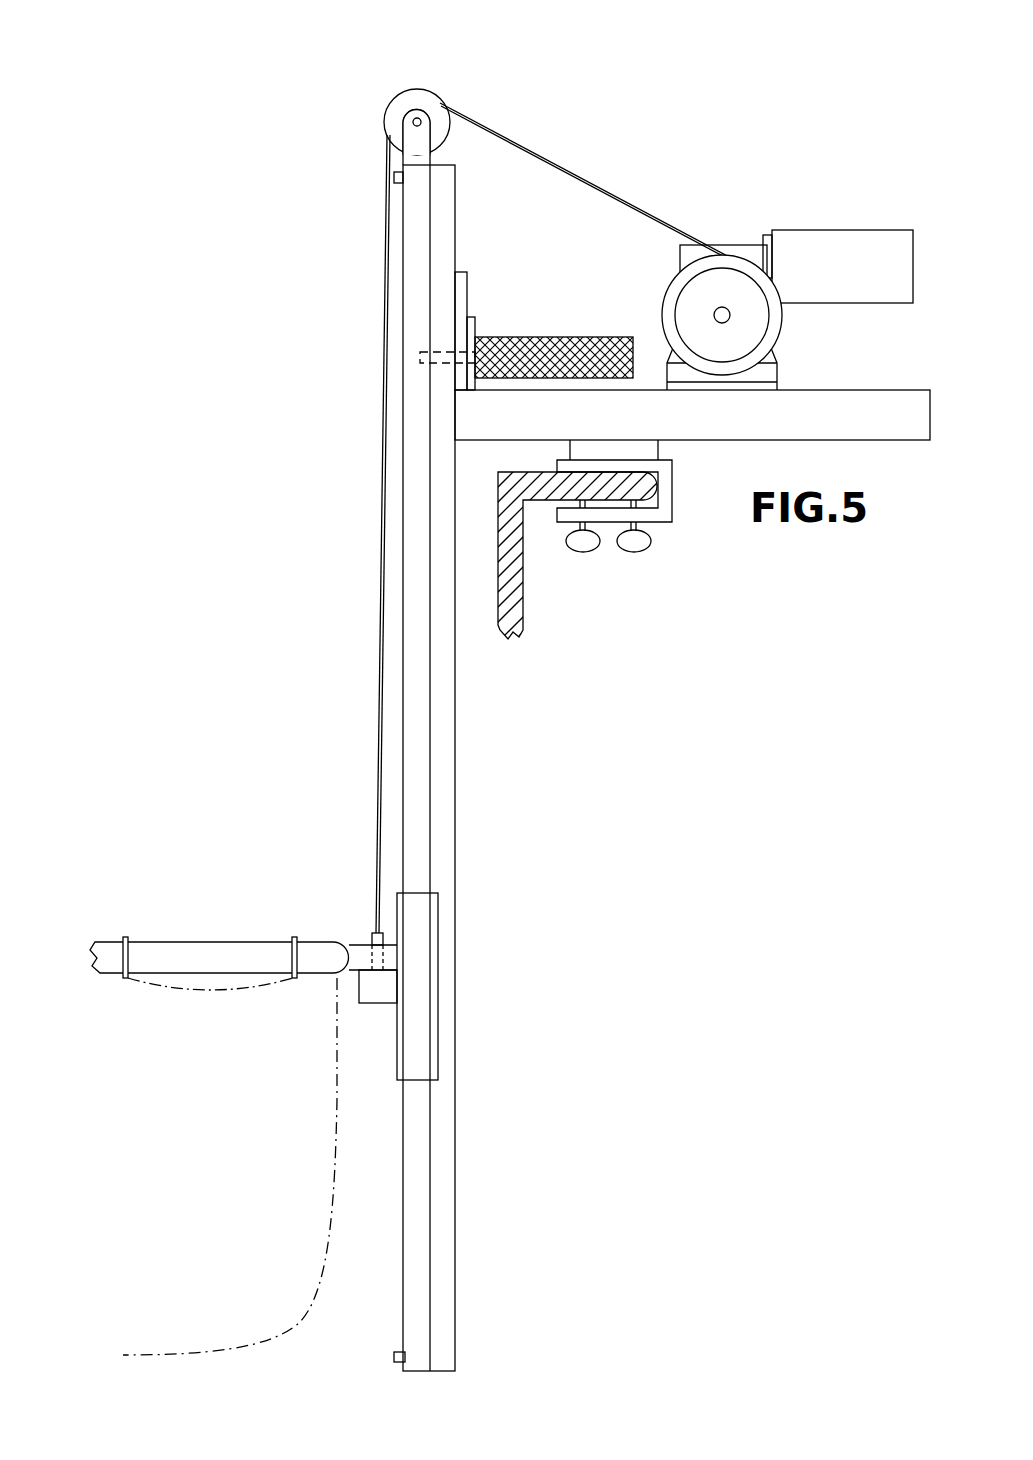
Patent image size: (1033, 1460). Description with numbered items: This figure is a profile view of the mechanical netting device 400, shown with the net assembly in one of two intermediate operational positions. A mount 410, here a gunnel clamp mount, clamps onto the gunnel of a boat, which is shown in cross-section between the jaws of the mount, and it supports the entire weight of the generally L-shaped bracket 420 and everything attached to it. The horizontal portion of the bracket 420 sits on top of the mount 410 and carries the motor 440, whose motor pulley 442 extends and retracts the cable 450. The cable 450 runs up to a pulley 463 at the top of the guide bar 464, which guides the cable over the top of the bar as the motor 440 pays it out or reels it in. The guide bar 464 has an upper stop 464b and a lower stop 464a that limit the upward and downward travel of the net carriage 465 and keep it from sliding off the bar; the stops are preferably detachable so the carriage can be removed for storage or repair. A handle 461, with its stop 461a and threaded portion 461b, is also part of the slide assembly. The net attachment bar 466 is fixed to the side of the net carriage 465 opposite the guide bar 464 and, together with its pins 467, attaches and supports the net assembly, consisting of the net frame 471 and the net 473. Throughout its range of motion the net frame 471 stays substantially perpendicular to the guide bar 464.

The mechanical netting device 400 is at (145, 120).
The mount 410 is at (662, 513).
The bracket 420 is at (772, 423).
The motor 440 is at (823, 267).
The motor pulley 442 is at (718, 290).
The cable 450 is at (598, 196).
The handle 461 is at (580, 336).
The stop 461a is at (472, 330).
The threaded portion 461b is at (440, 357).
The pulley 463 is at (428, 105).
The guide bar 464 is at (415, 635).
The lower stop 464a is at (396, 1356).
The upper stop 464b is at (399, 177).
The net carriage 465 is at (418, 945).
The net attachment bar 466 is at (377, 989).
The pins 467 is at (375, 937).
The net frame 471 is at (190, 956).
The net 473 is at (333, 1134).